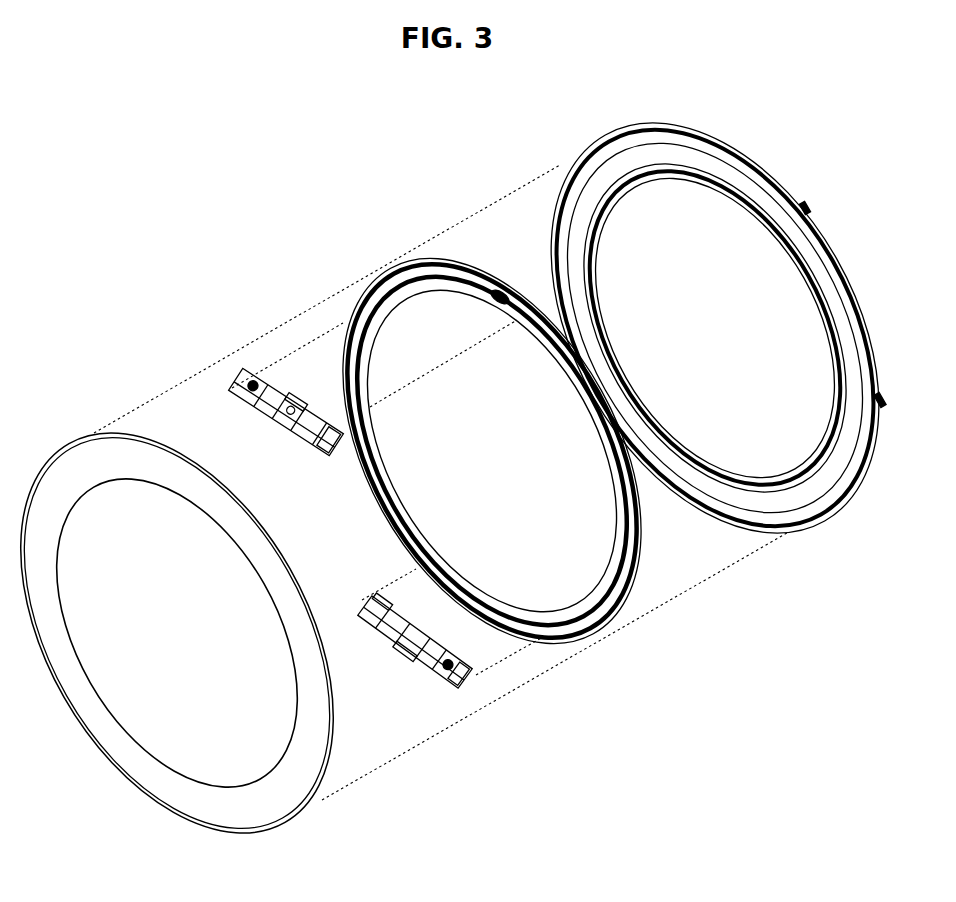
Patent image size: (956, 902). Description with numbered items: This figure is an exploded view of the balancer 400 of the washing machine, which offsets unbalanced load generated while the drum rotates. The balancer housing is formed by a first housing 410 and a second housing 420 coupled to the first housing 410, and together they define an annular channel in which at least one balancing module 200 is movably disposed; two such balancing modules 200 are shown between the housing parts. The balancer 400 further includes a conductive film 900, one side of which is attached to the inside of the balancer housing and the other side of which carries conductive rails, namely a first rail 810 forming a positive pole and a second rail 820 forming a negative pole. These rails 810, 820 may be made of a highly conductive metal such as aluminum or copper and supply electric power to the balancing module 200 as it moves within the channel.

The balancer 400 is at (402, 142).
The first housing 410 is at (691, 125).
The second housing 420 is at (195, 468).
The first rail 810 is at (372, 274).
The second rail 820 is at (408, 262).
The conductive film 900 is at (494, 286).
The balancing module 200 is at (253, 364).